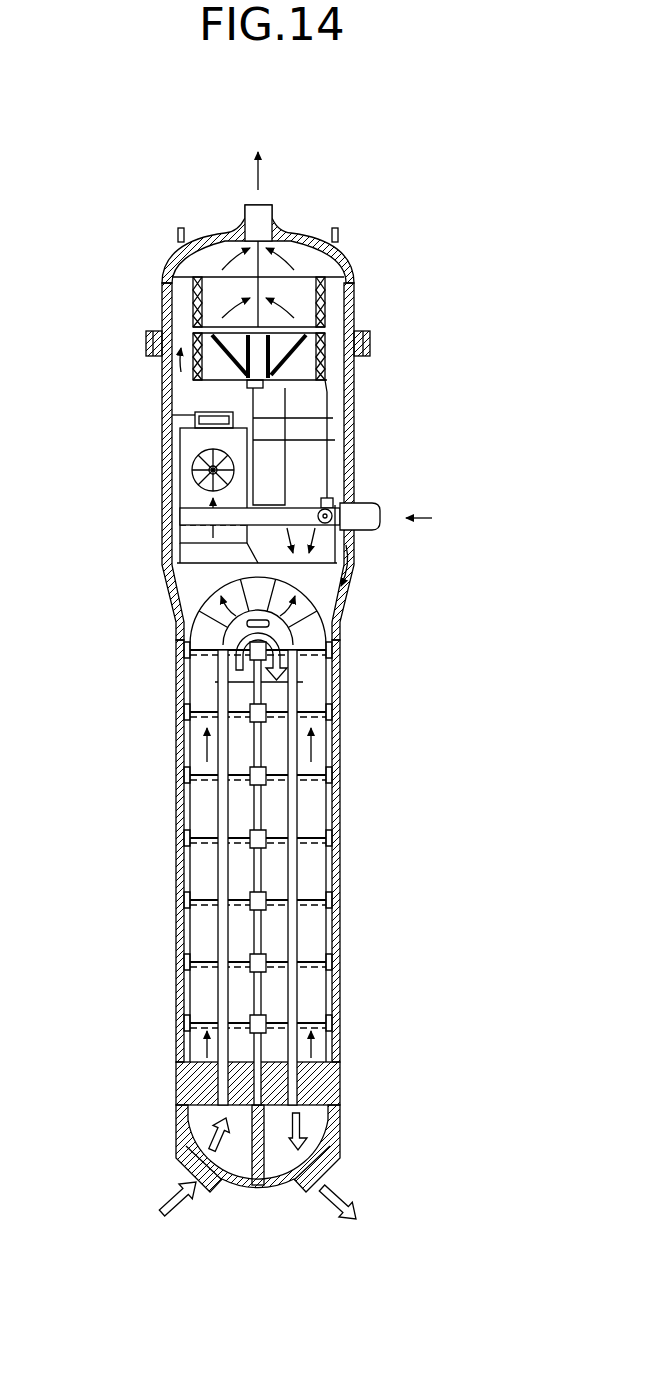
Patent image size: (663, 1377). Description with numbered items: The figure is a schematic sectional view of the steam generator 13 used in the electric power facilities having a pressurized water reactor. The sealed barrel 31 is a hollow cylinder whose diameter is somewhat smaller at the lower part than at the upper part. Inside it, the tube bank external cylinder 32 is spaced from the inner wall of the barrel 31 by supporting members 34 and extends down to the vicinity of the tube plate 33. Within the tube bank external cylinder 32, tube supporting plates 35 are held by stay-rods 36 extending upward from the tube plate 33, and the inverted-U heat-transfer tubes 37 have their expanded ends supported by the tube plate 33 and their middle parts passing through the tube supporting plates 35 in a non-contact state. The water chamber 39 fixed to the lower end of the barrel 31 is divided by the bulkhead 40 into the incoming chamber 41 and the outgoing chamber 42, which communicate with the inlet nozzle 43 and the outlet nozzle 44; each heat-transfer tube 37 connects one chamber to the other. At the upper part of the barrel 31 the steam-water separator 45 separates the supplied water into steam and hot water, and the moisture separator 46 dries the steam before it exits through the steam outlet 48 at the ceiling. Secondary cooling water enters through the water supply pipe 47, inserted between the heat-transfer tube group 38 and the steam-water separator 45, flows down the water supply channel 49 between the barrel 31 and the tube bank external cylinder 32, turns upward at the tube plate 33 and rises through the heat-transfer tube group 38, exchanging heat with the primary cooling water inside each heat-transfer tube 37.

The steam generator 13 is at (509, 121).
The barrel 31 is at (163, 385).
The tube bank external cylinder 32 is at (170, 601).
The tube plate 33 is at (338, 1093).
The supporting member 34 is at (190, 657).
The tube supporting plate 35 is at (310, 710).
The stay-rod 36 is at (262, 930).
The heat-transfer tube 37 is at (216, 810).
The heat-transfer tube group 38 is at (332, 628).
The water chamber 39 is at (178, 1112).
The bulkhead 40 is at (260, 1188).
The incoming chamber 41 is at (200, 1122).
The outgoing chamber 42 is at (322, 1127).
The inlet nozzle 43 is at (204, 1192).
The outlet nozzle 44 is at (315, 1193).
The steam-water separator 45 is at (182, 466).
The moisture separator 46 is at (300, 307).
The water supply pipe 47 is at (380, 502).
The steam outlet 48 is at (260, 213).
The water supply channel 49 is at (188, 1016).